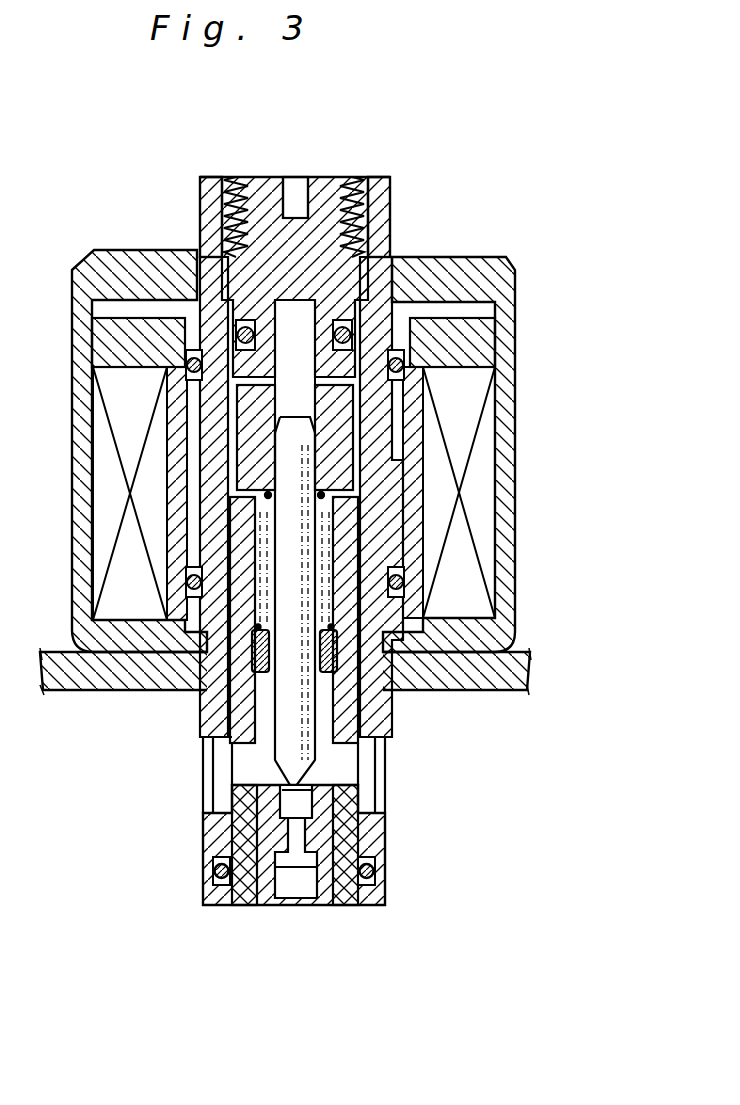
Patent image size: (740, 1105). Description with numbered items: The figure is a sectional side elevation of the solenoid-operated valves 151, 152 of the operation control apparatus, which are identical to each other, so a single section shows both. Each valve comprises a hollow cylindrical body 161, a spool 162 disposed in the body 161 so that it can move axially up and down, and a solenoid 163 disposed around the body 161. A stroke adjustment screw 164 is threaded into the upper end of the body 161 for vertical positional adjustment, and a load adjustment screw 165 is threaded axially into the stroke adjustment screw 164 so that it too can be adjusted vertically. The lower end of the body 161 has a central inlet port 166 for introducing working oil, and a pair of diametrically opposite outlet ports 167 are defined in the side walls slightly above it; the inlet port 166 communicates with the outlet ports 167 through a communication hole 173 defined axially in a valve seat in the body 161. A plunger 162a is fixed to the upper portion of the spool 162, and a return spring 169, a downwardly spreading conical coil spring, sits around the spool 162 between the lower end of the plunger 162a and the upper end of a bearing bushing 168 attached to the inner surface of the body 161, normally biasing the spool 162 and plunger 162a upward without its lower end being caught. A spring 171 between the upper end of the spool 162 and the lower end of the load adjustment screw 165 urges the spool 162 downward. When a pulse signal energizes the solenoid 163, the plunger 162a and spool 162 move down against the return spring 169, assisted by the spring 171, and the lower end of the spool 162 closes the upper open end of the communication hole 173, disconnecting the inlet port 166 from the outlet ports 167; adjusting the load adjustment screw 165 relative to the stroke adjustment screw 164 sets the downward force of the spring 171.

The solenoid-operated valve 151 is at (517, 192).
The solenoid-operated valve 152 is at (320, 523).
The hollow cylindrical body 161 is at (207, 212).
The spool 162 is at (297, 723).
The plunger 162a is at (337, 418).
The solenoid 163 is at (480, 507).
The stroke adjustment screw 164 is at (358, 175).
The load adjustment screw 165 is at (327, 175).
The inlet port 166 is at (298, 888).
The outlet ports 167 is at (223, 782).
The bearing bushing 168 is at (262, 658).
The return spring 169 is at (335, 510).
The spring 171 is at (375, 248).
The communication hole 173 is at (297, 803).